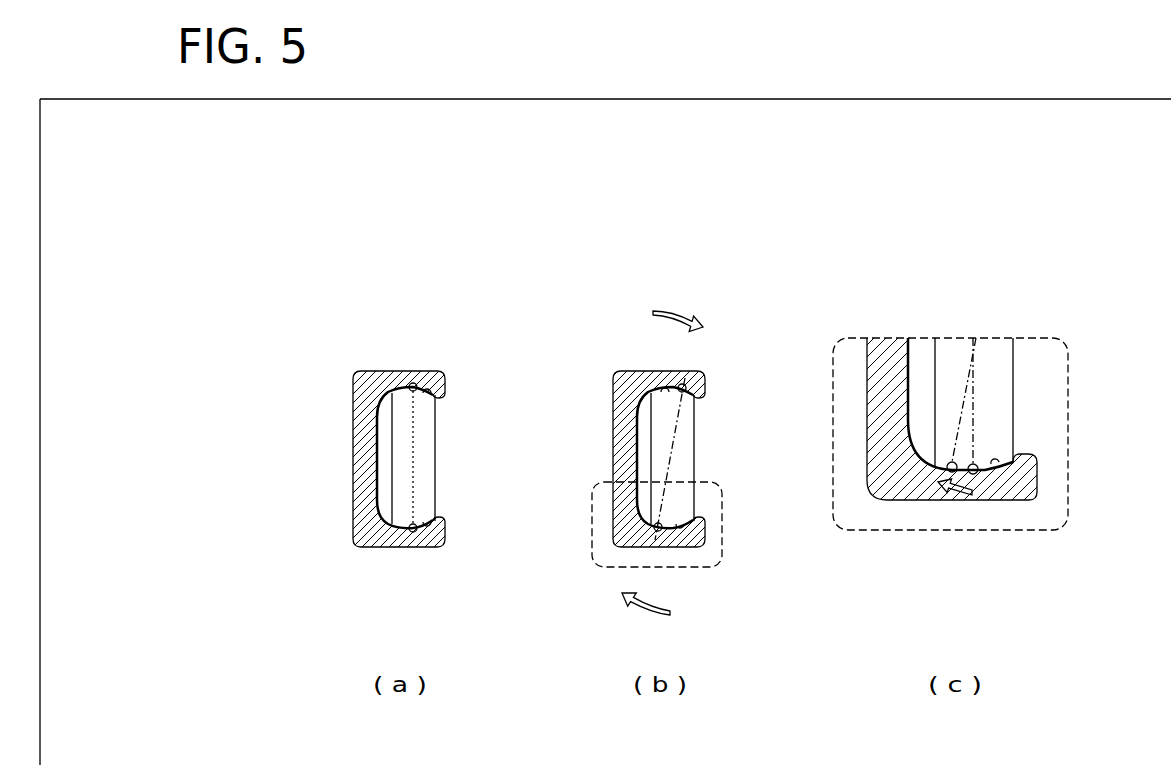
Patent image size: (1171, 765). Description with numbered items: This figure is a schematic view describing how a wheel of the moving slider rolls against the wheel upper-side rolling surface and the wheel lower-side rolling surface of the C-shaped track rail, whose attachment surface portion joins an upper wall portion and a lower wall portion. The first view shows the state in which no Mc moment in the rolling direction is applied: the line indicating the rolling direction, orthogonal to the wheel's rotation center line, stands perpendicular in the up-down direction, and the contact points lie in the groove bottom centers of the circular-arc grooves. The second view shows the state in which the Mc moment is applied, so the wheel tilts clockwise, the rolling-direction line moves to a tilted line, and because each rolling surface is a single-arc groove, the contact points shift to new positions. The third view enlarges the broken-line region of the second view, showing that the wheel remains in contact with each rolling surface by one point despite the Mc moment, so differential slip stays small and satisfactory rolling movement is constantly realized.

The Mc moment Mc is at (673, 312).